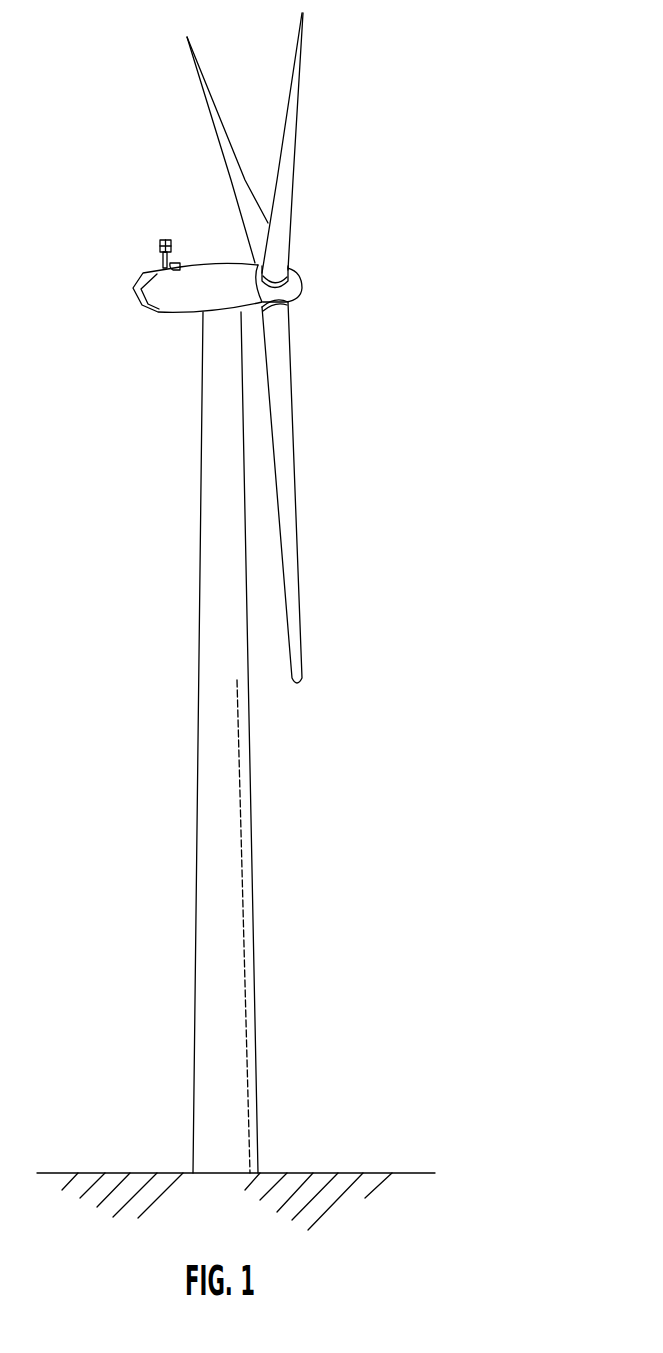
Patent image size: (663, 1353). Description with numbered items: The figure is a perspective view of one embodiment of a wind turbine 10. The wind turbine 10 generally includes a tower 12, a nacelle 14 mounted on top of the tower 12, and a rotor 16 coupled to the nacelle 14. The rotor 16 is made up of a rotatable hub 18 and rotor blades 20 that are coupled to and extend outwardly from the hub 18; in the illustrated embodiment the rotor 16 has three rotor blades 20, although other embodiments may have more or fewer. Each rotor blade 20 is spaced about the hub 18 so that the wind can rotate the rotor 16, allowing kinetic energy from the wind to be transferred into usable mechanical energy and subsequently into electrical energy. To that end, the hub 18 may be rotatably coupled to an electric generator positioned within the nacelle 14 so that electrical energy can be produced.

The wind turbine 10 is at (422, 98).
The tower 12 is at (215, 860).
The nacelle 14 is at (178, 315).
The rotor 16 is at (305, 260).
The rotatable hub 18 is at (297, 293).
The rotor blade 20 is at (293, 60).